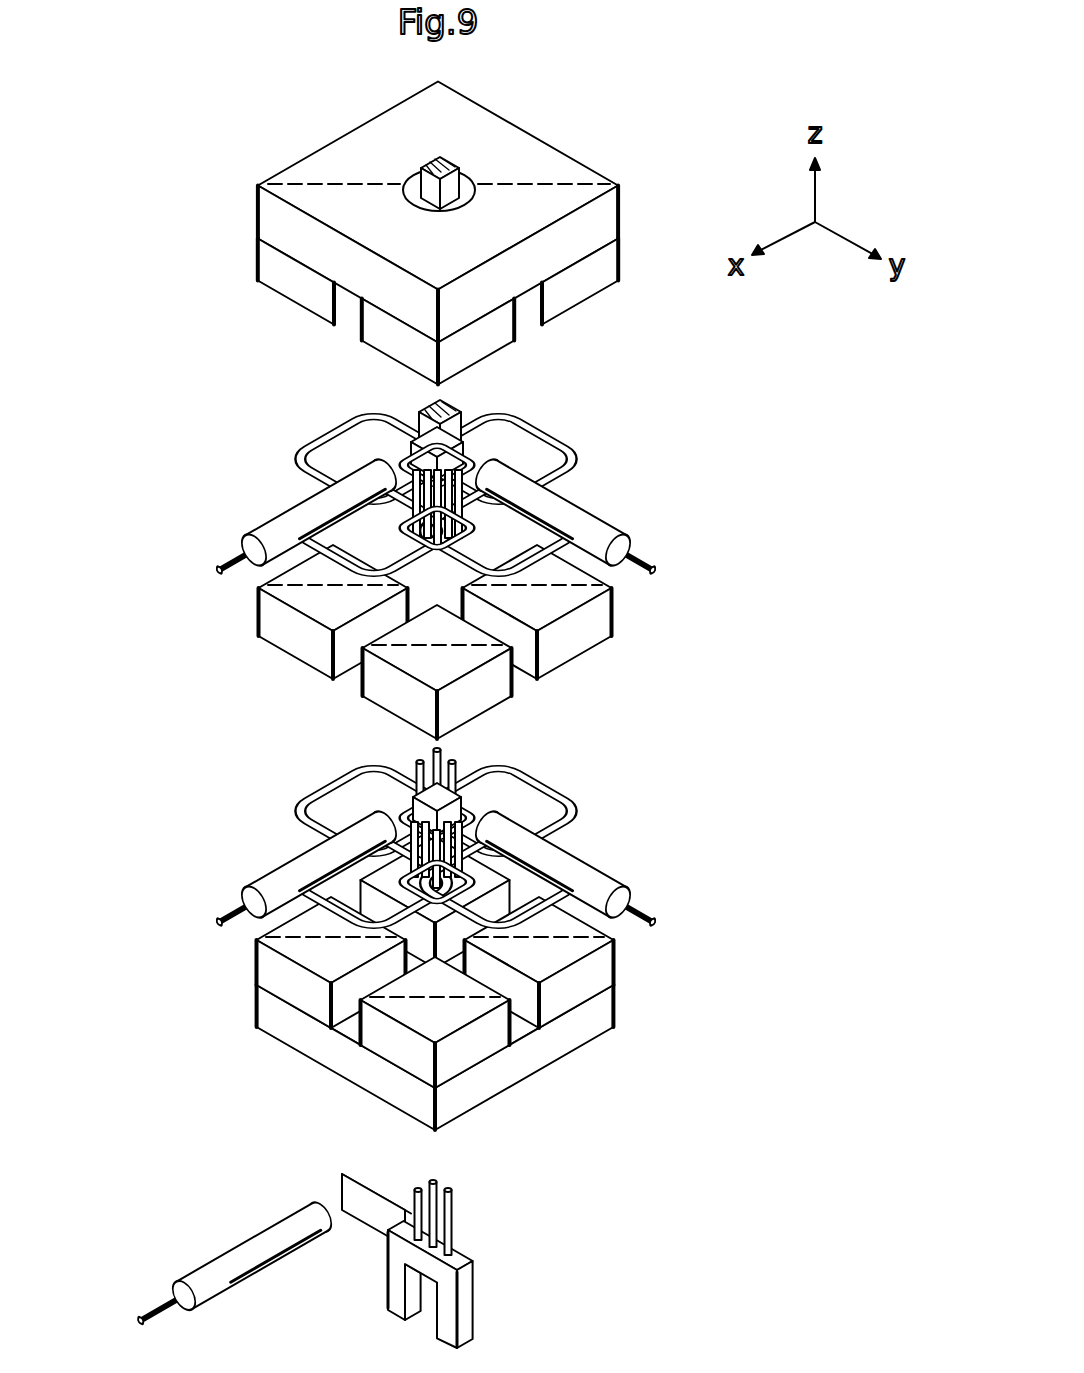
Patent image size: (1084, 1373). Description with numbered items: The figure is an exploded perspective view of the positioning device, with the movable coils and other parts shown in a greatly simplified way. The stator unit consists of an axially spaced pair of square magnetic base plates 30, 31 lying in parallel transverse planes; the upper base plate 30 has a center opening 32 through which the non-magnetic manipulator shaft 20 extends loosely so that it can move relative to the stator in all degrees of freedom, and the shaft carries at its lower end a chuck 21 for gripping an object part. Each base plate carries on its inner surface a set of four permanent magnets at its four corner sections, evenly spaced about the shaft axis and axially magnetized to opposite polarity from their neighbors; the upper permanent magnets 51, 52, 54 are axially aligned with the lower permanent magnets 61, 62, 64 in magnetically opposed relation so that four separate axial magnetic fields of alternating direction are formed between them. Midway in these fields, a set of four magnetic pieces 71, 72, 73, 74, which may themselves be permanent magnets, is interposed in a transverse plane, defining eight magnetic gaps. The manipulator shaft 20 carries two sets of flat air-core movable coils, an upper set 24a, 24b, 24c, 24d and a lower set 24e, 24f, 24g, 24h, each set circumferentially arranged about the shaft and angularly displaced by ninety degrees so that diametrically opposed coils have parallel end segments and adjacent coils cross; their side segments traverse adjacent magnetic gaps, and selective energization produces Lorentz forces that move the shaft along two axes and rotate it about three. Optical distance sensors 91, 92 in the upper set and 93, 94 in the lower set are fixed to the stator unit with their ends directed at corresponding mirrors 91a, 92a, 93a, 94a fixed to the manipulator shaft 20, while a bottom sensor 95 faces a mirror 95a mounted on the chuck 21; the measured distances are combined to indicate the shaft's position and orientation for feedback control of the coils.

The manipulator shaft 20 is at (442, 168).
The chuck 21 is at (394, 1290).
The movable coil 24a is at (350, 578).
The movable coil 24b is at (492, 566).
The movable coil 24c is at (576, 456).
The movable coil 24d is at (372, 412).
The movable coil 24e is at (352, 922).
The movable coil 24f is at (518, 915).
The movable coil 24g is at (580, 814).
The movable coil 24h is at (300, 805).
The upper base plate 30 is at (620, 186).
The lower base plate 31 is at (614, 1030).
The center opening 32 is at (473, 190).
The permanent magnet 51 is at (516, 343).
The permanent magnet 52 is at (622, 268).
The permanent magnet 54 is at (258, 276).
The permanent magnet 61 is at (462, 1062).
The permanent magnet 62 is at (615, 984).
The permanent magnet 64 is at (257, 950).
The magnetic piece 71 is at (484, 695).
The magnetic piece 72 is at (612, 602).
The magnetic piece 73 is at (540, 522).
The magnetic piece 74 is at (262, 594).
The sensor 91 is at (276, 520).
The mirror 91a is at (416, 448).
The sensor 92 is at (612, 540).
The mirror 92a is at (470, 444).
The sensor 93 is at (276, 872).
The mirror 93a is at (412, 787).
The sensor 94 is at (600, 894).
The mirror 94a is at (470, 797).
The bottom sensor 95 is at (265, 1238).
The mirror 95a is at (360, 1192).